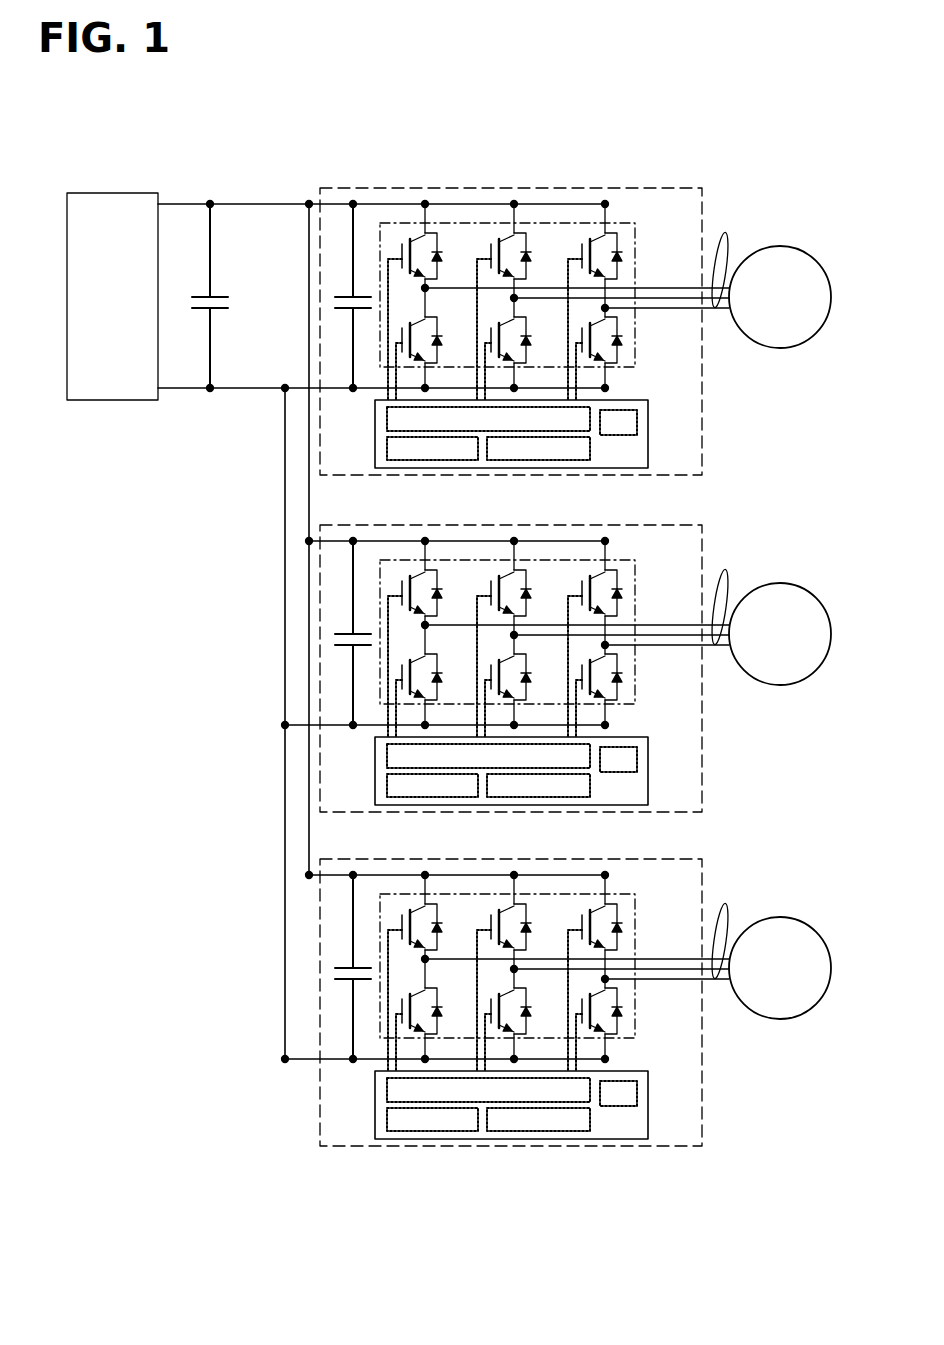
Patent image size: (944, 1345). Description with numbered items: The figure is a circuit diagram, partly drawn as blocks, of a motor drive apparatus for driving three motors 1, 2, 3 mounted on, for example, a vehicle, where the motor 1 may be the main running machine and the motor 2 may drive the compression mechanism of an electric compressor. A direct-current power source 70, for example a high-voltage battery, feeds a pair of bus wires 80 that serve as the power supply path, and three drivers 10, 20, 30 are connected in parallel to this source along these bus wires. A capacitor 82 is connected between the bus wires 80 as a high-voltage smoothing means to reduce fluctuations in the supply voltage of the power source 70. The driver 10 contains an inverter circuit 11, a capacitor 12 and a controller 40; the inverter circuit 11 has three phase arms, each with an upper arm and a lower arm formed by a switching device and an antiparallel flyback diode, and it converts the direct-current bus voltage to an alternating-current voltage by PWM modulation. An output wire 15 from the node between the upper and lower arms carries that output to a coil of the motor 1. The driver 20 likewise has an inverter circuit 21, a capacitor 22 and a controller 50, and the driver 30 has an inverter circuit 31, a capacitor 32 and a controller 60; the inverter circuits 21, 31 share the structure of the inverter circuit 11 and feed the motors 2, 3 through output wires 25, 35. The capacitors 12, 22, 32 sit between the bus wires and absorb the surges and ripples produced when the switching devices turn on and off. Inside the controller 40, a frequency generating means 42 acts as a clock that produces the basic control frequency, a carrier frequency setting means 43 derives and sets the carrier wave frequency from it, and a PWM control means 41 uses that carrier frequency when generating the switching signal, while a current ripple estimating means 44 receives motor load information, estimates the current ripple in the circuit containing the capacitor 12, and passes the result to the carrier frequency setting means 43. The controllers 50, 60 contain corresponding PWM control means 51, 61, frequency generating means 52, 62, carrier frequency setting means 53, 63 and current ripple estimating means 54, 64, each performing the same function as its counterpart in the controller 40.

The motor 1 is at (802, 246).
The motor 2 is at (780, 610).
The motor 3 is at (780, 944).
The driver 10 is at (704, 190).
The inverter circuit 11 is at (636, 243).
The capacitor 12 is at (343, 291).
The output wire 15 is at (723, 257).
The driver 20 is at (540, 657).
The inverter circuit 21 is at (534, 639).
The capacitor 22 is at (348, 633).
The output wire 25 is at (723, 594).
The driver 30 is at (540, 991).
The inverter circuit 31 is at (534, 973).
The capacitor 32 is at (348, 967).
The output wire 35 is at (723, 928).
The controller 40 is at (625, 400).
The PWM control means 41 is at (386, 418).
The frequency generating means 42 is at (386, 448).
The carrier frequency setting means 43 is at (591, 446).
The current ripple estimating means 44 is at (638, 420).
The controller 50 is at (509, 757).
The PWM control means 51 is at (459, 757).
The frequency generating means 52 is at (403, 787).
The carrier frequency setting means 53 is at (589, 787).
The current ripple estimating means 54 is at (645, 757).
The controller 60 is at (509, 1091).
The PWM control means 61 is at (459, 1091).
The frequency generating means 62 is at (403, 1121).
The carrier frequency setting means 63 is at (589, 1121).
The current ripple estimating means 64 is at (645, 1091).
The direct-current power source 70 is at (113, 400).
The bus wires 80 is at (255, 200).
The capacitor 82 is at (228, 292).